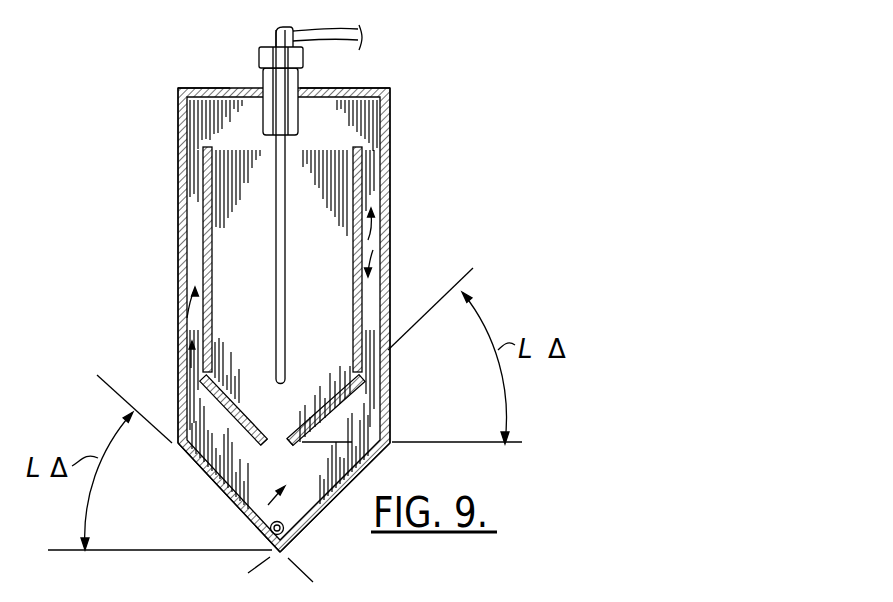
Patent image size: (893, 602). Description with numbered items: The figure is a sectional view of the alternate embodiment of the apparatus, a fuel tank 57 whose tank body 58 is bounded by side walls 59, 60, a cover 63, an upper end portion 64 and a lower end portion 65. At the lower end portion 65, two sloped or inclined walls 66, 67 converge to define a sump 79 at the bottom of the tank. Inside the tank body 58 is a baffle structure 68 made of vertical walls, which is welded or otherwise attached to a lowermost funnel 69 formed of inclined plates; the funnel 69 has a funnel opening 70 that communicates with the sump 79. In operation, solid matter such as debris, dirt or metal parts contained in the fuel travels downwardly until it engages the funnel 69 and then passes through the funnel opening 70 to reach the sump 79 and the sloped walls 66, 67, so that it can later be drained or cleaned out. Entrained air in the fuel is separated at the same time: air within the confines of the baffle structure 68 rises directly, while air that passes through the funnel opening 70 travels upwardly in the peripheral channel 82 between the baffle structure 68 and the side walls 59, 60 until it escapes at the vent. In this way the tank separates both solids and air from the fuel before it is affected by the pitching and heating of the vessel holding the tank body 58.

The fuel tank 57 is at (463, 103).
The tank body 58 is at (178, 97).
The side wall 59 is at (178, 193).
The side wall 60 is at (390, 180).
The cover 63 is at (242, 88).
The upper end portion 64 is at (389, 92).
The lower end portion 65 is at (312, 523).
The inclined wall 66 is at (213, 488).
The inclined wall 67 is at (367, 474).
The baffle structure 68 is at (206, 298).
The funnel 69 is at (234, 398).
The funnel opening 70 is at (279, 447).
The sump 79 is at (258, 522).
The peripheral channel 82 is at (385, 238).